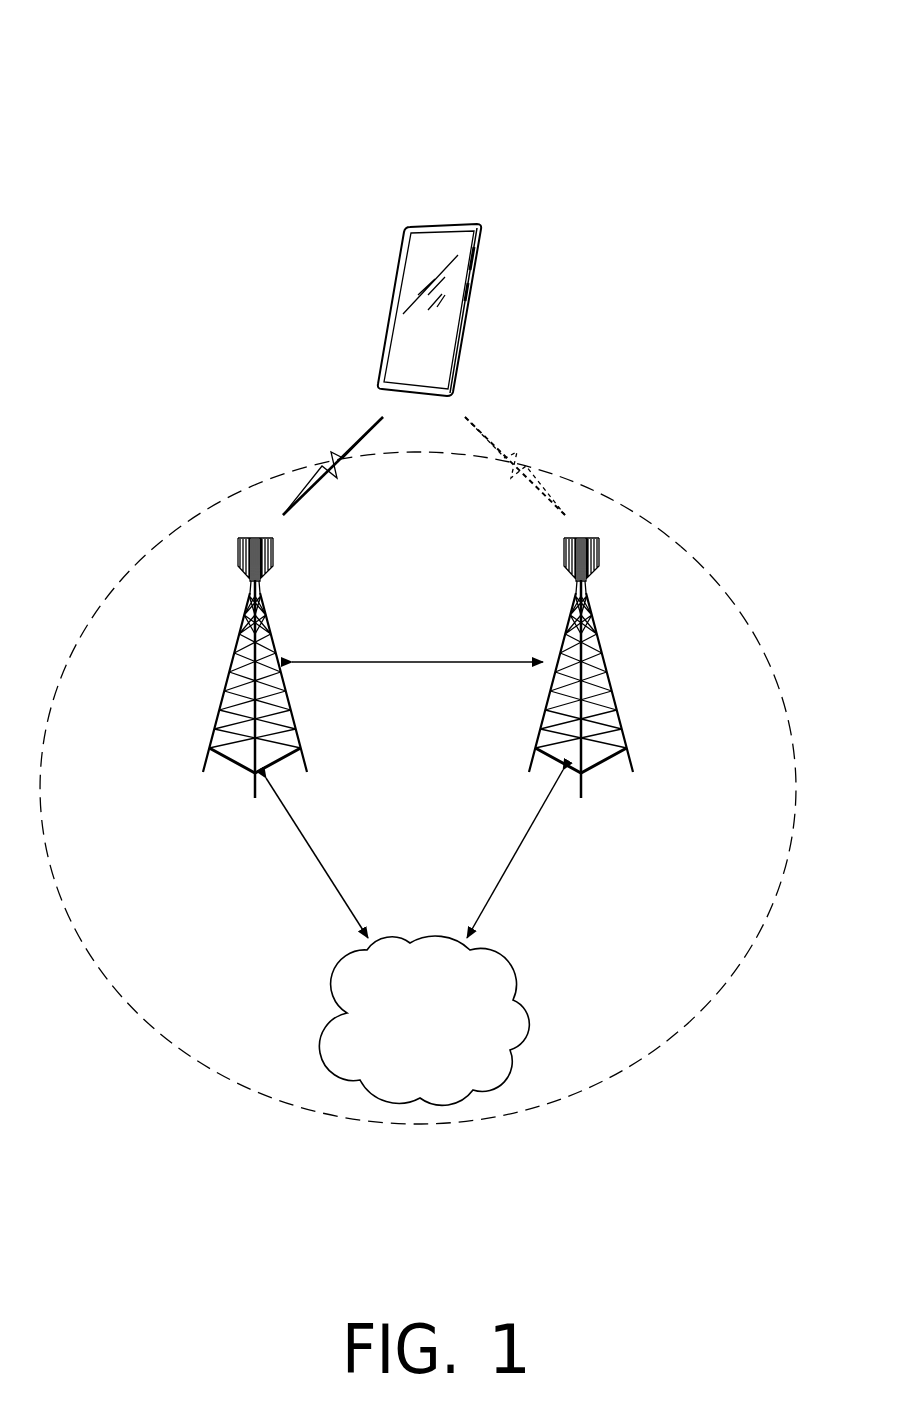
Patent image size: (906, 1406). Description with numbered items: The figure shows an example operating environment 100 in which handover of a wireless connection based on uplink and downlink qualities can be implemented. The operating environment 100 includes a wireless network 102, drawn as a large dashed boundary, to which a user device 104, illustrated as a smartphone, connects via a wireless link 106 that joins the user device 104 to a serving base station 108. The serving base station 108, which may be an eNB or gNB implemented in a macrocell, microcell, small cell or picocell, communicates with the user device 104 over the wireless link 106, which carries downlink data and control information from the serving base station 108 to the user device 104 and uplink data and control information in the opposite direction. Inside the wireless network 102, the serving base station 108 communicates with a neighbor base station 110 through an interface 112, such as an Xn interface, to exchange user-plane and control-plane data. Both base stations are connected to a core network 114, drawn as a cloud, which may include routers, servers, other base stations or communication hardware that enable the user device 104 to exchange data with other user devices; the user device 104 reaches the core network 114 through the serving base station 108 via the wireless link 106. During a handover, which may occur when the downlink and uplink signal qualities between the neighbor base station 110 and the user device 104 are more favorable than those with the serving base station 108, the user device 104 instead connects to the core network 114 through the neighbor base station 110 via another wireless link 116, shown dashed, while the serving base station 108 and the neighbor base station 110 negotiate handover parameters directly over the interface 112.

The operating environment 100 is at (124, 38).
The wireless network 102 is at (659, 526).
The user device 104 is at (507, 191).
The wireless link 106 is at (341, 444).
The serving base station 108 is at (241, 621).
The neighbor base station 110 is at (597, 621).
The interface 112 is at (410, 646).
The core network 114 is at (414, 937).
The another wireless link 116 is at (512, 445).